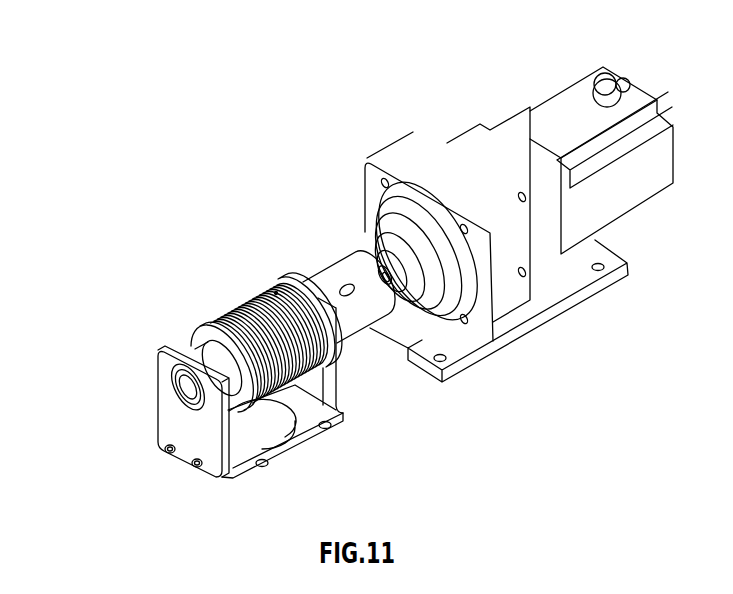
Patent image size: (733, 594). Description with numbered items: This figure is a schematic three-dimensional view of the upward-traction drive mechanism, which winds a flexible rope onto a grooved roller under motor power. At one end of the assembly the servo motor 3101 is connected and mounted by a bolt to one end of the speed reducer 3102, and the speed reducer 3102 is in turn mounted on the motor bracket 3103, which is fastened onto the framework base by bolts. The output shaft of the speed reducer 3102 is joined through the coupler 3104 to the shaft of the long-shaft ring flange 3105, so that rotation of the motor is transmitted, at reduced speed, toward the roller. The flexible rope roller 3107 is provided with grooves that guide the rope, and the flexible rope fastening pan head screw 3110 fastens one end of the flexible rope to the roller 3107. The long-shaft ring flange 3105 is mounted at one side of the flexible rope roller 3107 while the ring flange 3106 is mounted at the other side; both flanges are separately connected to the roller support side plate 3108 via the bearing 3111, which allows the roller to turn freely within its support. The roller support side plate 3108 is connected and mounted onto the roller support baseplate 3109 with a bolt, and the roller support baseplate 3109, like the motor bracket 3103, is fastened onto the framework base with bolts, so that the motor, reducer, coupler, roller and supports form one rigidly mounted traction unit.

The servo motor 3101 is at (537, 130).
The speed reducer 3102 is at (428, 153).
The motor bracket 3103 is at (367, 167).
The coupler 3104 is at (353, 250).
The long-shaft ring flange 3105 is at (267, 290).
The flexible rope fastening pan head screw 3110 is at (260, 290).
The flexible rope roller 3107 is at (210, 330).
The roller support side plate 3108 is at (177, 343).
The bearing 3111 is at (177, 377).
The ring flange 3106 is at (173, 397).
The roller support baseplate 3109 is at (200, 462).